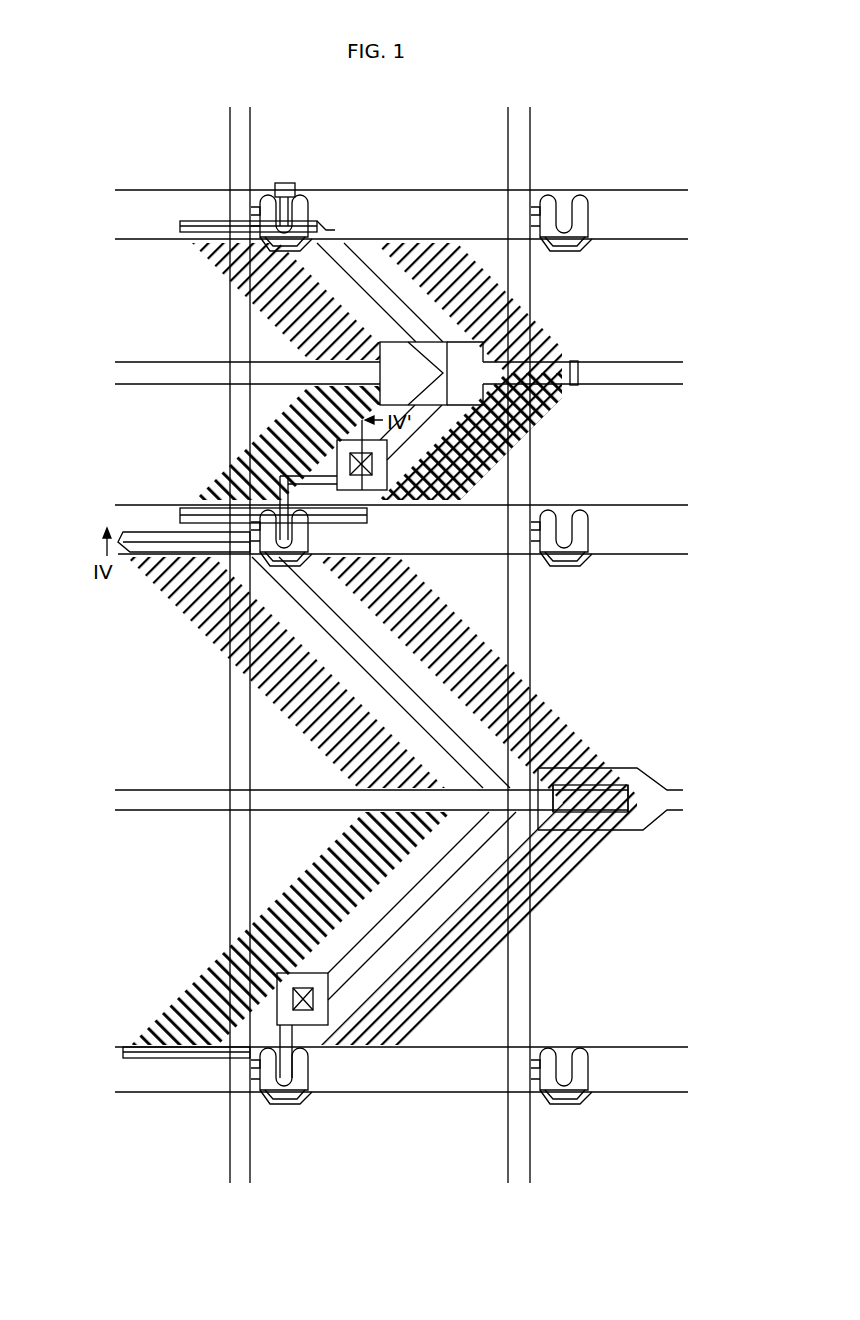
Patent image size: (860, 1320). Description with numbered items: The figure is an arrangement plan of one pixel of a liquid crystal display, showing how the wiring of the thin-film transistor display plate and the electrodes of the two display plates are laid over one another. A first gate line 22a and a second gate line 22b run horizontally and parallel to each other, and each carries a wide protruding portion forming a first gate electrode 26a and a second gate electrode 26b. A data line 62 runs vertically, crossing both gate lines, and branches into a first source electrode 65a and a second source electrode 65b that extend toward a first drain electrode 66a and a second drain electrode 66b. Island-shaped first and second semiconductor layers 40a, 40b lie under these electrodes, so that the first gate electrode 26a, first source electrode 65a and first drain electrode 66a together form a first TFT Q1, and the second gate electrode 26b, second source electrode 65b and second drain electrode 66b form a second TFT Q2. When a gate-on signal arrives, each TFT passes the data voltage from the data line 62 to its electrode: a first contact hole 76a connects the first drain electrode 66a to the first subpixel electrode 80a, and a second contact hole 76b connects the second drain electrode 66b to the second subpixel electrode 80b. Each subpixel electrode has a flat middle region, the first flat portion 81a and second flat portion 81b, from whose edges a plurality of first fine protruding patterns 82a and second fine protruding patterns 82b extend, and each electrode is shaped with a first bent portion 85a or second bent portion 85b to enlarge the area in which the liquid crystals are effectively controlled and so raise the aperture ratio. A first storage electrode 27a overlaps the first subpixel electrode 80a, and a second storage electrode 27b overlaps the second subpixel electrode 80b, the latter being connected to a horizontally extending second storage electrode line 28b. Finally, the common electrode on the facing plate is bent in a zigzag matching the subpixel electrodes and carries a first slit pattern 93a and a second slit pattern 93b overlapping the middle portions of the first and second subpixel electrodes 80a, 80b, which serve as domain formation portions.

The data line 62 is at (230, 150).
The first bent portion 85a is at (258, 352).
The second bent portion 85b is at (290, 832).
The second storage electrode line 28b is at (480, 352).
The first storage electrode 27a is at (651, 367).
The second storage electrode 27b is at (670, 796).
The first flat portion 81a is at (395, 432).
The first fine protruding patterns 82a is at (470, 460).
The first subpixel electrode 80a is at (536, 442).
The second flat portion 81b is at (430, 900).
The second fine protruding patterns 82b is at (470, 955).
The second subpixel electrode 80b is at (508, 906).
The first slit pattern 93a is at (405, 438).
The second slit pattern 93b is at (353, 652).
The first contact hole 76a is at (350, 462).
The second contact hole 76b is at (292, 998).
The first drain electrode 66a is at (250, 510).
The second drain electrode 66b is at (248, 1037).
The first gate line 22a is at (650, 507).
The second gate line 22b is at (648, 1058).
The first semiconductor layer 40a is at (250, 545).
The second semiconductor layer 40b is at (246, 1075).
The first source electrode 65a is at (240, 580).
The second source electrode 65b is at (260, 1097).
The first gate electrode 26a is at (305, 598).
The second gate electrode 26b is at (300, 1105).
The first TFT Q1 is at (221, 568).
The second TFT Q2 is at (231, 1112).